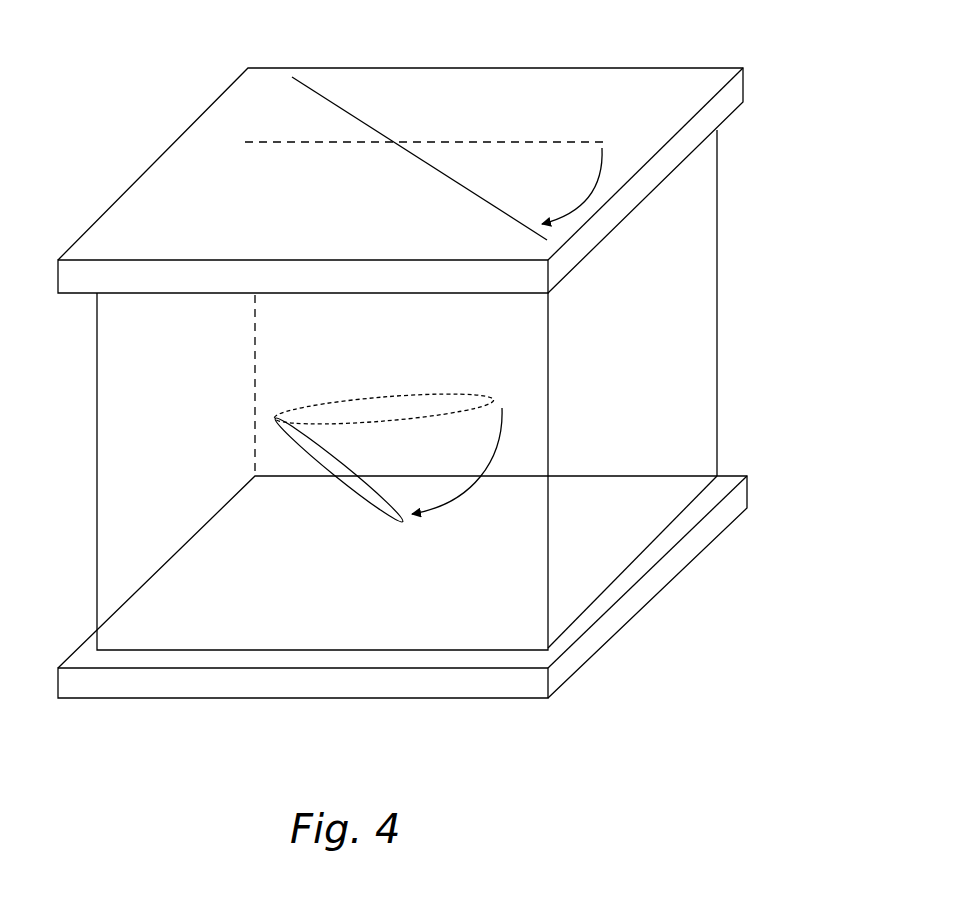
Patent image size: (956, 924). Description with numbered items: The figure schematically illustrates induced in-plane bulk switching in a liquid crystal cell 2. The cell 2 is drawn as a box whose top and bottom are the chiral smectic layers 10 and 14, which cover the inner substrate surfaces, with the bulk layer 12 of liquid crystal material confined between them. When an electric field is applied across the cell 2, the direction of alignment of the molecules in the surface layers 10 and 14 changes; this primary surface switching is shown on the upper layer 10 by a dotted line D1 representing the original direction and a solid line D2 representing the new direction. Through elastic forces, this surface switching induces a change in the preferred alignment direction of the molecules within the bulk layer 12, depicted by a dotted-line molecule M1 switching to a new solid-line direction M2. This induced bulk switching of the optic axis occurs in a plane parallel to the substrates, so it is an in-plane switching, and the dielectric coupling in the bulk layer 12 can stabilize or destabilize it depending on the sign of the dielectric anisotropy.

The cell 2 is at (168, 128).
The chiral smectic layer 10 is at (745, 80).
The bulk layer 12 is at (718, 313).
The chiral smectic layer 14 is at (748, 480).
The dotted line D1 is at (508, 142).
The solid line D2 is at (368, 118).
The molecule M1 is at (433, 398).
The new direction M2 is at (340, 482).